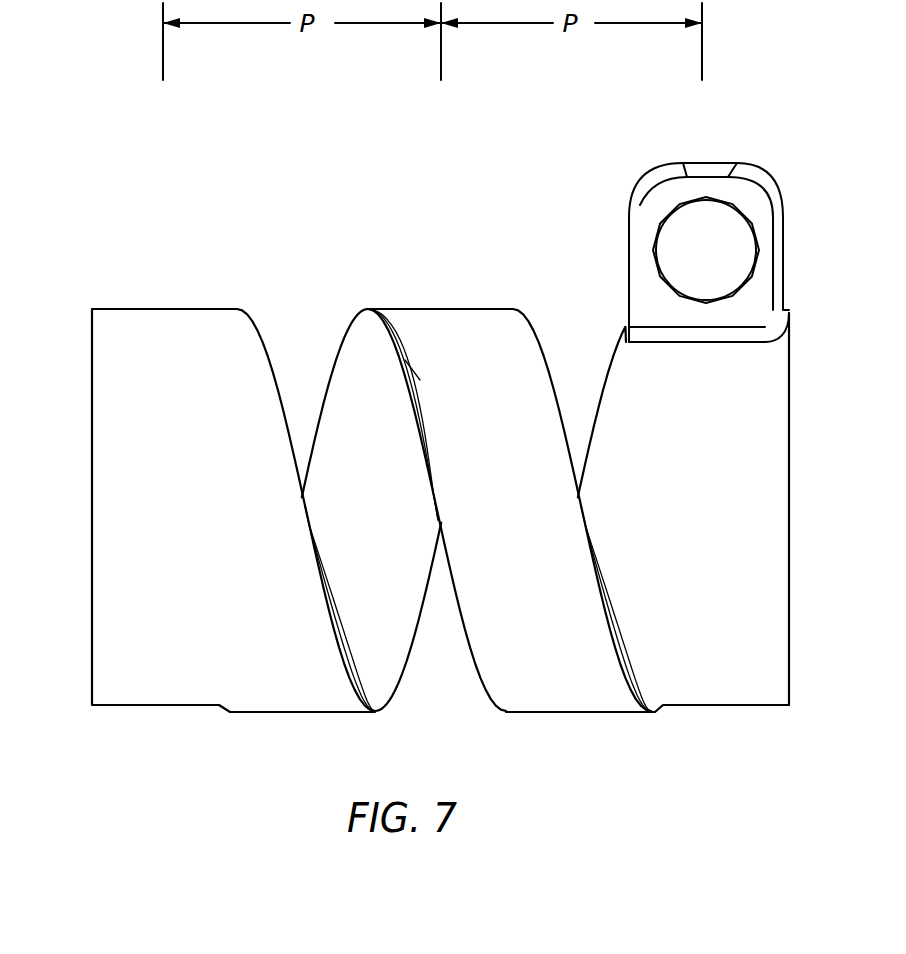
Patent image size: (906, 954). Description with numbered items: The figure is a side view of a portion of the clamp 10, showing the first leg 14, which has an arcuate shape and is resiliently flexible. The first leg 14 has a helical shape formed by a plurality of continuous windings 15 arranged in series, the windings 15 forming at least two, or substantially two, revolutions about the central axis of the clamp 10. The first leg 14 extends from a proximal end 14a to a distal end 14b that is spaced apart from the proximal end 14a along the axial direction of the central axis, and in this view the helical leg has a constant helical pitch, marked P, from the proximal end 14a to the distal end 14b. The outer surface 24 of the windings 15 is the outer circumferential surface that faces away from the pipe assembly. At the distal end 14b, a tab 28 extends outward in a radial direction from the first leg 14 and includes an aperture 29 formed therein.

The clamp 10 is at (207, 200).
The first leg 14 is at (168, 711).
The proximal end 14a is at (146, 328).
The distal end 14b is at (717, 373).
The continuous windings 15 is at (116, 450).
The outer surface 24 is at (500, 330).
The tab 28 is at (733, 190).
The aperture 29 is at (710, 233).